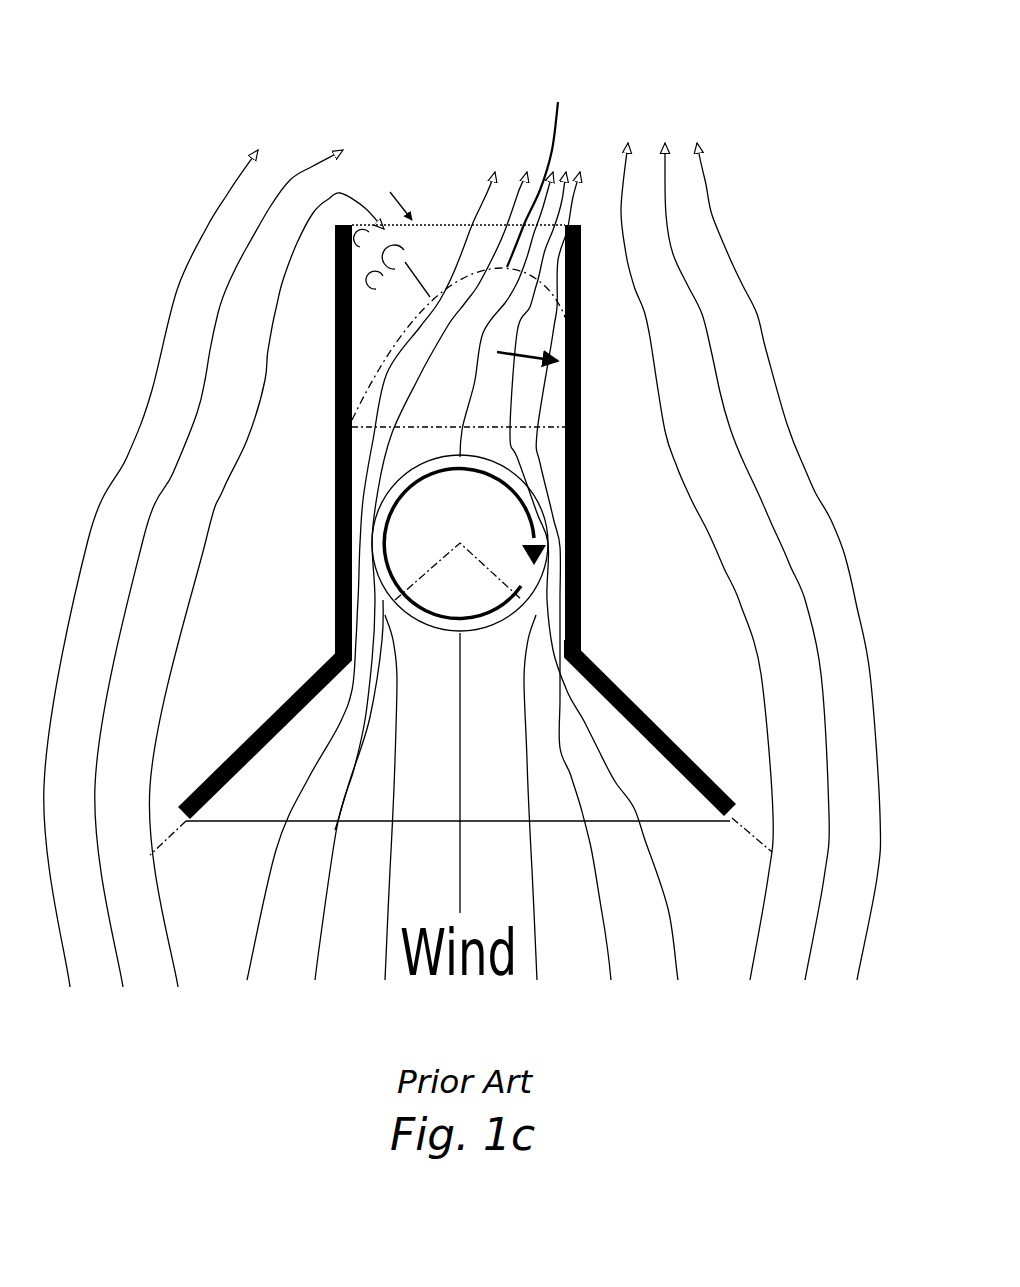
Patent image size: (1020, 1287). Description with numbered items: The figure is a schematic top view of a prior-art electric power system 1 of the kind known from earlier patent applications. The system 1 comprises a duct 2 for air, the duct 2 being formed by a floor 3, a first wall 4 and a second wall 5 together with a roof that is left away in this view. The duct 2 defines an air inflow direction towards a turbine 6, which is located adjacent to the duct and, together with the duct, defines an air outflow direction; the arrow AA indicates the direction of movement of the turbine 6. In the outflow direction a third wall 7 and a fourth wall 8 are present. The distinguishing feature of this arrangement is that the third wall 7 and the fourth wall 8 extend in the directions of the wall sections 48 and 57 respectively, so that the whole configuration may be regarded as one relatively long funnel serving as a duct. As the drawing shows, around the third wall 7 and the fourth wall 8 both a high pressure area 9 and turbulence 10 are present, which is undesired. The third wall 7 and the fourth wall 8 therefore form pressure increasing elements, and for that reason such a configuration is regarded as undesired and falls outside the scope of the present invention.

The electric power system 1 is at (180, 80).
The duct 2 is at (436, 806).
The floor 3 is at (678, 802).
The first wall 4 is at (278, 720).
The second wall 5 is at (662, 715).
The turbine 6 is at (441, 443).
The third wall 7 is at (580, 335).
The fourth wall 8 is at (335, 335).
The high pressure area 9 is at (515, 352).
The turbulence 10 is at (420, 238).
The wall section 48 is at (335, 518).
The wall section 57 is at (581, 517).
The arrow indicating direction of movement of the turbine AA is at (462, 468).